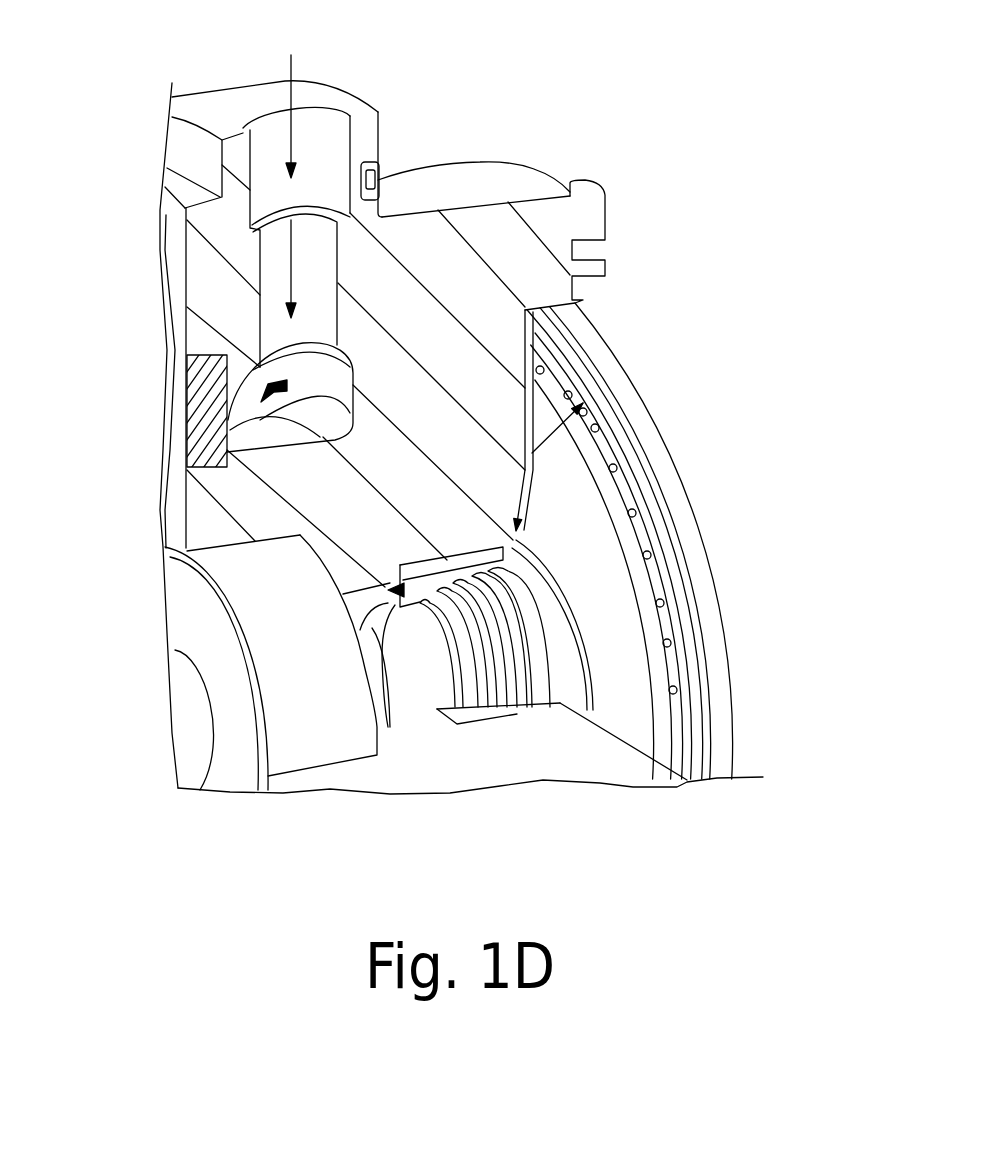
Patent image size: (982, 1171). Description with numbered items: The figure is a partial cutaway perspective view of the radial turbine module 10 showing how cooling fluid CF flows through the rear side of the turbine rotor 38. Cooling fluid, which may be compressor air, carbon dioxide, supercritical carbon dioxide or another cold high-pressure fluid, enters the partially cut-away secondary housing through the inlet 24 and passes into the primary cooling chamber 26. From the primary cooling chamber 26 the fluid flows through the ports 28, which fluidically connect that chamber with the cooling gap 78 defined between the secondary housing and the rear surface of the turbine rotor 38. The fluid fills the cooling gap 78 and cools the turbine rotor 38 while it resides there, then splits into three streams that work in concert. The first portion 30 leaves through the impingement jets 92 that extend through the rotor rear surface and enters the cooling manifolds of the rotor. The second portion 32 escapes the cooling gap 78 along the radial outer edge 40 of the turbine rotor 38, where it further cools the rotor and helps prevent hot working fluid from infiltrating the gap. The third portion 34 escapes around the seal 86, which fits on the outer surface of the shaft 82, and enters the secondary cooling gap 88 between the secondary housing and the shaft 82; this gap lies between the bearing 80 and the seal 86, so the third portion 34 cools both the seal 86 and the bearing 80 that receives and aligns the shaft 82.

The radial turbine module 10 is at (712, 125).
The inlet 24 is at (308, 120).
The primary cooling chamber 26 is at (233, 382).
The ports 28 is at (185, 465).
The first portion 30 is at (553, 453).
The second portion 32 is at (593, 297).
The third portion 34 is at (425, 603).
The turbine rotor 38 is at (648, 430).
The radial outer edge 40 is at (580, 328).
The cooling gap 78 is at (635, 742).
The bearing 80 is at (303, 738).
The shaft 82 is at (197, 720).
The seal 86 is at (517, 714).
The secondary cooling gap 88 is at (373, 600).
The impingement jets 92 is at (598, 420).